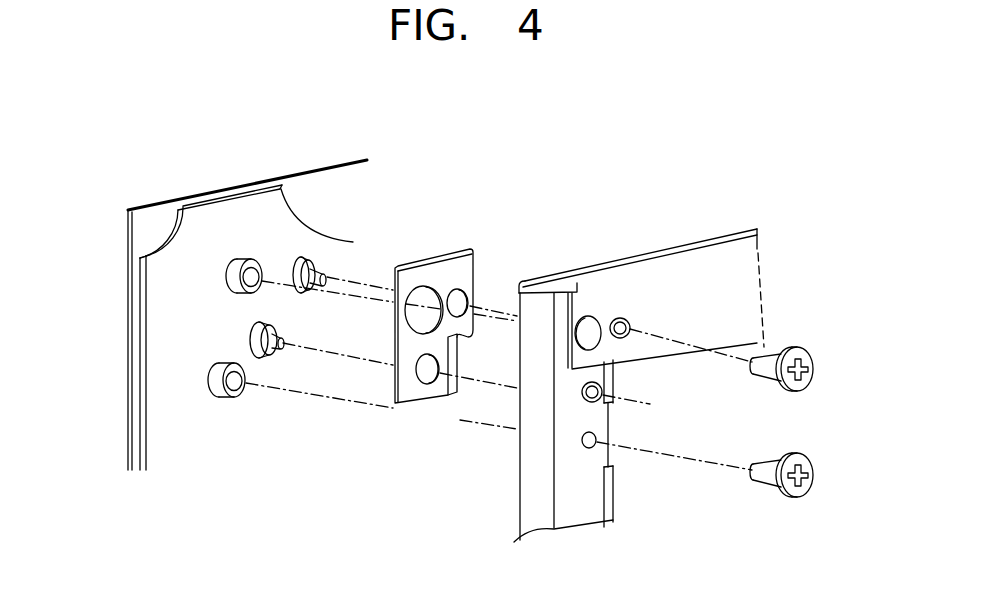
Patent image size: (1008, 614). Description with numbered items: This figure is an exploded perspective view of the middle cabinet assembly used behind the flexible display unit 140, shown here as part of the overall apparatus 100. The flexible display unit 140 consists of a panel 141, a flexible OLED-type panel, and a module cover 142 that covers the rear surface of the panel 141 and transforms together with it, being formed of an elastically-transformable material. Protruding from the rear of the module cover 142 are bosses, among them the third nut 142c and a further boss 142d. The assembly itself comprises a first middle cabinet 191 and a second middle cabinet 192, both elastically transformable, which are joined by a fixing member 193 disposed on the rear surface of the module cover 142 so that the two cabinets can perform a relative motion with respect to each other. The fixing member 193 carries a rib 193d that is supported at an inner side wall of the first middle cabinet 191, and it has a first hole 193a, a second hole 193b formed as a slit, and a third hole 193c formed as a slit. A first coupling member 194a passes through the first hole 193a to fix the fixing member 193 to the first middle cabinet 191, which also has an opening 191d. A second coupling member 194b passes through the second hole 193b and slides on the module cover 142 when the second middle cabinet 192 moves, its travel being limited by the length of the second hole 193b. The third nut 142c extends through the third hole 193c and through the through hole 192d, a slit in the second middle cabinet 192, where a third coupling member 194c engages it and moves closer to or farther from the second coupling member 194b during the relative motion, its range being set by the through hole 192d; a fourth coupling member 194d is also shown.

The display apparatus assembly 100 is at (620, 146).
The flexible display unit 140 is at (222, 137).
The panel 141 is at (173, 205).
The module cover 142 is at (229, 199).
The third nut 142c is at (225, 268).
The boss 142d is at (208, 380).
The first coupling member 194a is at (250, 338).
The second coupling member 194b is at (317, 254).
The third coupling member 194c is at (802, 380).
The screw 194d is at (803, 485).
The fixing member 193 is at (451, 263).
The first hole 193a is at (413, 373).
The second hole 193b is at (464, 291).
The third hole 193c is at (428, 288).
The rib 193d is at (453, 393).
The second middle cabinet 192 is at (704, 250).
The through hole 192d is at (589, 321).
The first middle cabinet 191 is at (528, 506).
The frame hole 191d is at (582, 441).